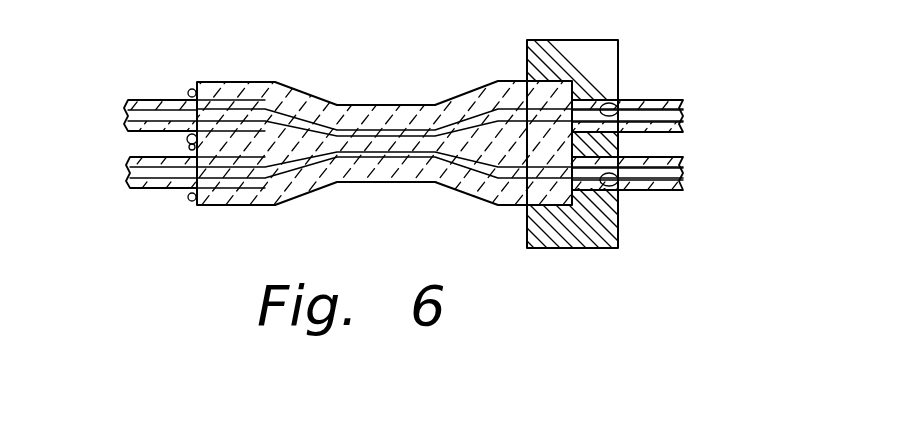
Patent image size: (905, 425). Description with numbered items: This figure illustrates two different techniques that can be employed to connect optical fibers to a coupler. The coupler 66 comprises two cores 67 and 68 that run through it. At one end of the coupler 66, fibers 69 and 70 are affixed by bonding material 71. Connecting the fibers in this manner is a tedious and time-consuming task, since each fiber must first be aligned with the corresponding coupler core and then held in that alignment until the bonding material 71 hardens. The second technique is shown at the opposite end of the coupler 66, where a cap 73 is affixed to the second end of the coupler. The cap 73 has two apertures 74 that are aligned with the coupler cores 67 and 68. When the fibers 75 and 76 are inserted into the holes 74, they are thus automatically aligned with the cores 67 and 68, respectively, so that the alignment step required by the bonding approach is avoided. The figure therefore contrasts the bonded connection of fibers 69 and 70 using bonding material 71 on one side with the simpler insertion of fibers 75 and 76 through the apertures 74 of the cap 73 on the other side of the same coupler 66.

The coupler 66 is at (455, 195).
The core 67 is at (484, 178).
The core 68 is at (470, 122).
The fiber 69 is at (138, 172).
The fiber 70 is at (133, 117).
The bonding material 71 is at (189, 92).
The cap 73 is at (588, 38).
The apertures 74 is at (623, 100).
The fiber 75 is at (681, 172).
The fiber 76 is at (684, 115).